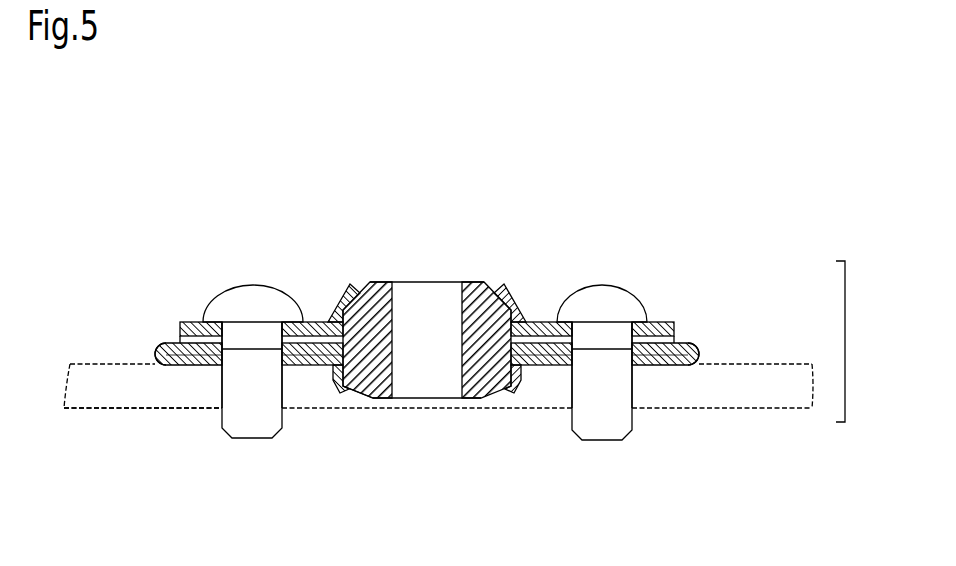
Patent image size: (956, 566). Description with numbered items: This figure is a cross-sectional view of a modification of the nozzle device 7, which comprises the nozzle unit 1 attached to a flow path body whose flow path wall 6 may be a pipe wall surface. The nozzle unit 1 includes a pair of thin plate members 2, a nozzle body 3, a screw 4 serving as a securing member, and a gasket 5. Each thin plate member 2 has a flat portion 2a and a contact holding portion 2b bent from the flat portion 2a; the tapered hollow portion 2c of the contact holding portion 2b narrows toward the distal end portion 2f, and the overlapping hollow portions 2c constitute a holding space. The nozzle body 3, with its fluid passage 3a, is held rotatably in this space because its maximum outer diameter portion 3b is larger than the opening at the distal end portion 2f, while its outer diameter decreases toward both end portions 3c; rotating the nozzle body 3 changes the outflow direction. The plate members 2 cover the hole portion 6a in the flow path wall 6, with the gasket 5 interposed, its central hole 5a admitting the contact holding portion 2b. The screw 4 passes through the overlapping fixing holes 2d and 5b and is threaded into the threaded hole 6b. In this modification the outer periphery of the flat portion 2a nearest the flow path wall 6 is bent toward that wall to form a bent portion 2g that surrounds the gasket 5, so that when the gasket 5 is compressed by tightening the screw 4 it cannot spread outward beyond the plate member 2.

The nozzle unit 1 is at (331, 172).
The thin plate member 2 is at (172, 348).
The flat portion 2a is at (313, 320).
The contact holding portion 2b is at (342, 300).
The hollow portion 2c is at (505, 378).
The fixing hole 2d is at (628, 310).
The distal end portion 2f is at (354, 300).
The bent portion 2g is at (158, 356).
The nozzle body 3 is at (477, 288).
The fluid passage 3a is at (460, 398).
The maximum outer diameter portion 3b is at (345, 387).
The end portion 3c is at (380, 284).
The screw 4 is at (255, 297).
The gasket 5 is at (660, 367).
The central hole 5a is at (325, 368).
The fixing hole 5b is at (633, 375).
The flow path wall 6 is at (705, 392).
The hole portion 6a is at (330, 372).
The threaded hole 6b is at (577, 385).
The nozzle device 7 is at (845, 340).